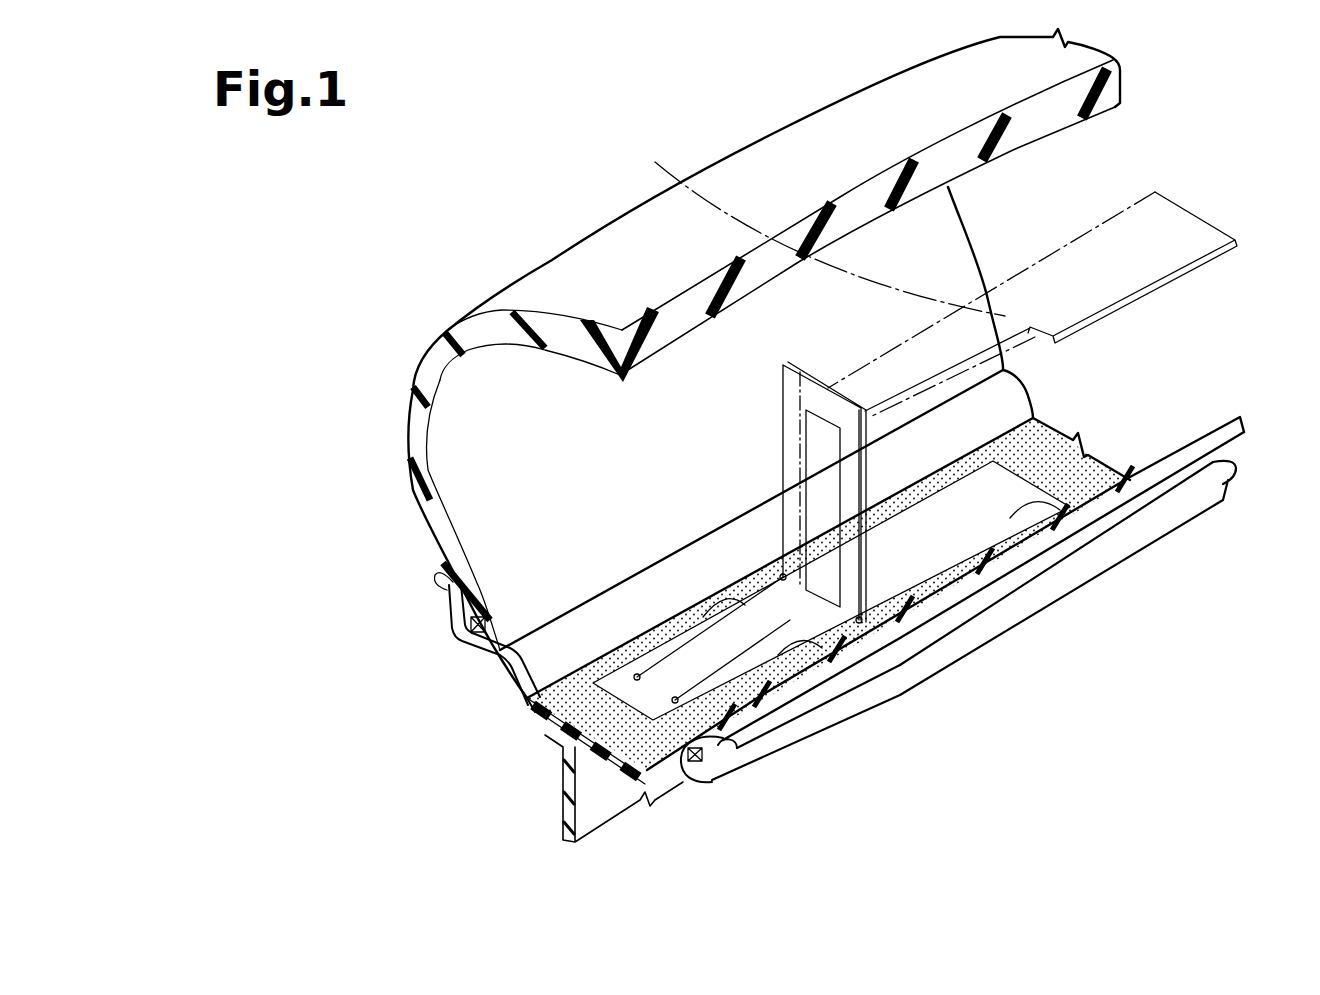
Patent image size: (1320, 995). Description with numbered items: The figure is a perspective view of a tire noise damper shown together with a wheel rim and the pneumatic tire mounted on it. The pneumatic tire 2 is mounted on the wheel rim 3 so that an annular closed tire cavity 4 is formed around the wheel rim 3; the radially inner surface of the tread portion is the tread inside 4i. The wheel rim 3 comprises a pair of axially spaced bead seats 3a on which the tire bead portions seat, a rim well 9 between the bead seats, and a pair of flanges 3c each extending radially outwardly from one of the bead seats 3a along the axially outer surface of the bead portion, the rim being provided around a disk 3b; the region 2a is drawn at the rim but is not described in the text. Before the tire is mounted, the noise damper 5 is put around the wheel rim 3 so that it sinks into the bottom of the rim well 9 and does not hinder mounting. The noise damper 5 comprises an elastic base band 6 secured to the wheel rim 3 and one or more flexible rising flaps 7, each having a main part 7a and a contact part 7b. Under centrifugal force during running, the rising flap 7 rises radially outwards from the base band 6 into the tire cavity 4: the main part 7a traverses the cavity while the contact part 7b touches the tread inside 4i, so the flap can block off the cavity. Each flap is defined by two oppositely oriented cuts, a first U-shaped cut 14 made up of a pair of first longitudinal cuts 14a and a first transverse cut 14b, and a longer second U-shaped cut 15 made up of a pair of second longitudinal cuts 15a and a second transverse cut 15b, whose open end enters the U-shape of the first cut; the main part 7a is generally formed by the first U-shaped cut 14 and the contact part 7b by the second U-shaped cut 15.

The pneumatic tire 2 is at (405, 544).
The mounting portion 2a is at (460, 607).
The wheel rim 3 is at (312, 688).
The bead seats 3a is at (452, 673).
The disk 3b is at (538, 812).
The flanges 3c is at (447, 597).
The tire cavity 4 is at (475, 430).
The tread inside 4i is at (465, 470).
The noise damper 5 is at (630, 93).
The base band 6 is at (587, 662).
The rising flap 7 is at (676, 137).
The main part 7a is at (773, 412).
The contact part 7b is at (1100, 640).
The rim well 9 is at (527, 712).
The first U-shaped cut 14 is at (807, 657).
The first longitudinal cuts 14a is at (767, 670).
The first transverse cut 14b is at (658, 708).
The second U-shaped cut 15 is at (1040, 472).
The second longitudinal cuts 15a is at (966, 492).
The second transverse cut 15b is at (1055, 515).